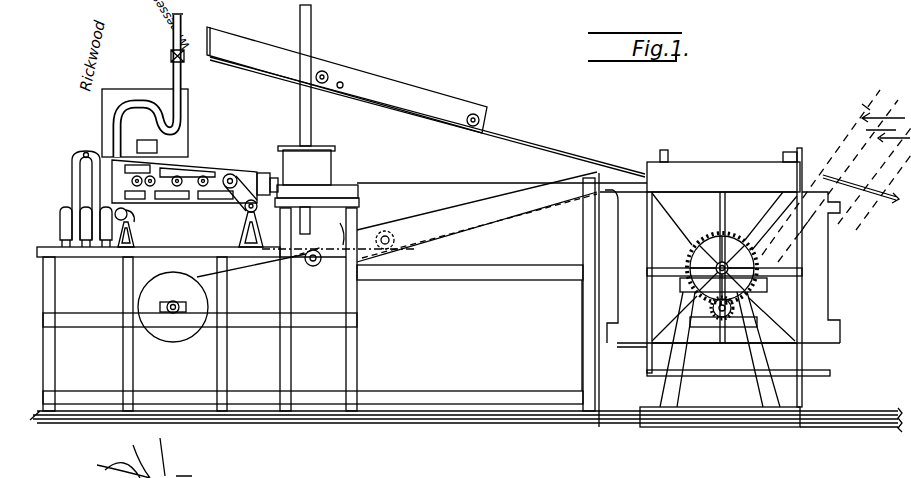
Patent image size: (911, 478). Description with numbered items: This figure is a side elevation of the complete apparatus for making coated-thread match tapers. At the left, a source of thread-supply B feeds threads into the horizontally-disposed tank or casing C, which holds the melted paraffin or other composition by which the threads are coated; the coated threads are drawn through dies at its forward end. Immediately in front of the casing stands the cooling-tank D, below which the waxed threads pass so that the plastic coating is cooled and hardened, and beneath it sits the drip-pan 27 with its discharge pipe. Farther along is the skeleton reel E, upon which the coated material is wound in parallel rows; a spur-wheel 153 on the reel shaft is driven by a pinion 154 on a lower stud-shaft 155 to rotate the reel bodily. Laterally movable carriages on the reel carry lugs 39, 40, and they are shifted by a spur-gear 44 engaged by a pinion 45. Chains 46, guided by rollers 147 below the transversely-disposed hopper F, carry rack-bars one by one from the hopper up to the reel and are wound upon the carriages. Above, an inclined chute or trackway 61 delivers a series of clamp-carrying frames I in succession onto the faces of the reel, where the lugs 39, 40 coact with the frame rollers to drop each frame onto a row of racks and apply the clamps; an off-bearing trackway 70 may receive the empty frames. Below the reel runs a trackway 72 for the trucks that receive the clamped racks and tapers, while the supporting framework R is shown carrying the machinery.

The source of thread-supply B is at (75, 199).
The tank or casing C is at (195, 194).
The cooling-tank D is at (317, 106).
The skeleton reel E is at (740, 150).
The hopper F is at (336, 236).
The frames I is at (271, 49).
The table frame R is at (246, 330).
The drip-pan 27 is at (755, 259).
The lug 39 is at (670, 156).
The lug 40 is at (798, 152).
The spur-gear 44 is at (173, 314).
The pinion 45 is at (167, 268).
The chain 46 is at (460, 245).
The inclined chute or trackway 61 is at (540, 135).
The off-bearing trackway 70 is at (890, 185).
The trackway 72 is at (841, 414).
The rollers 147 is at (313, 268).
The spur-wheel 153 is at (744, 229).
The pinion 154 is at (740, 310).
The stud-shaft 155 is at (723, 329).